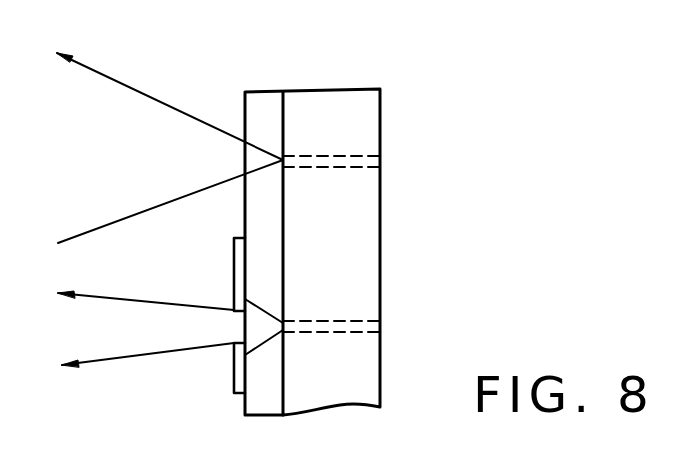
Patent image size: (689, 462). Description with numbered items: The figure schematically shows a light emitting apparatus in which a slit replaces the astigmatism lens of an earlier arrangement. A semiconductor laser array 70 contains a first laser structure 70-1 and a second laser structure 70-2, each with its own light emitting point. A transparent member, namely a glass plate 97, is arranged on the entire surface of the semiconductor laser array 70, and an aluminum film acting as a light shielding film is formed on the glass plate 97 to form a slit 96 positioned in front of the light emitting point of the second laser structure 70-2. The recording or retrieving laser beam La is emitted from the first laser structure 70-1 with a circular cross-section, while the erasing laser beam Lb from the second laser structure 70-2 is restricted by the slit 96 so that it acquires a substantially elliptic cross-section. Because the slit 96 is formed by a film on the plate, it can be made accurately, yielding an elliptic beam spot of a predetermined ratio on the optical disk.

The semiconductor laser array 70 is at (339, 102).
The glass plate 97 is at (264, 105).
The first laser structure 70-1 is at (358, 168).
The second laser structure 70-2 is at (353, 318).
The slit 96 is at (233, 380).
The recording or retrieving laser beam La is at (137, 107).
The erasing laser beam Lb is at (152, 345).